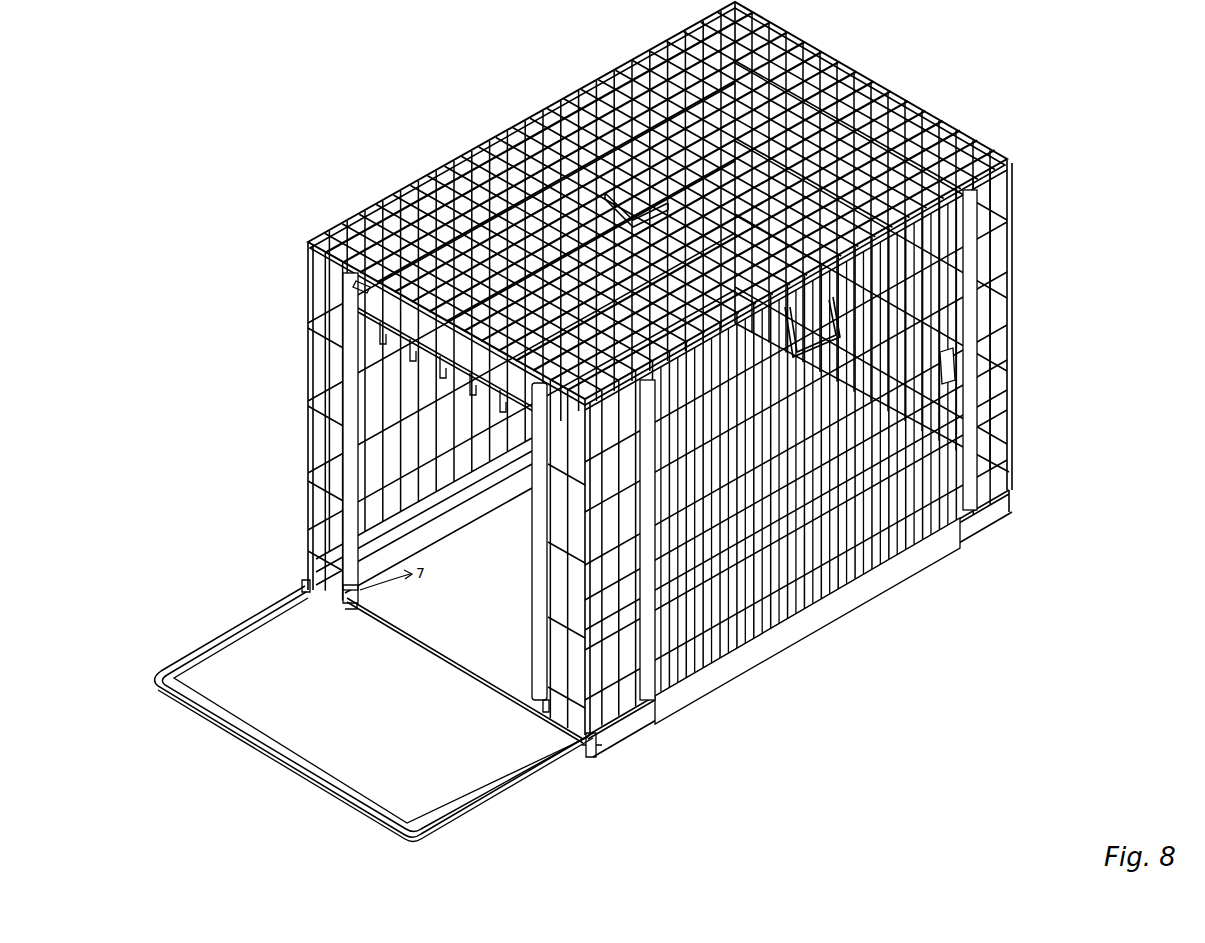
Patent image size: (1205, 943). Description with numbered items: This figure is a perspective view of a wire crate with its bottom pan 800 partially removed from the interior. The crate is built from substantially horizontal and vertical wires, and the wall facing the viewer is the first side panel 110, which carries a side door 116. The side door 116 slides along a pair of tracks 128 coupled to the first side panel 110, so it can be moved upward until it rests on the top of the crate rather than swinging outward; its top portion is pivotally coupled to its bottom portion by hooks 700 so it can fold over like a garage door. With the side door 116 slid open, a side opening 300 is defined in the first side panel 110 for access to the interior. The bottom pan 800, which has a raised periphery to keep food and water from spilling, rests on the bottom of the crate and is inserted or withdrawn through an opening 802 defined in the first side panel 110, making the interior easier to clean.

The first side panel 110 is at (330, 412).
The side door 116 is at (468, 156).
The tracks 128 is at (353, 472).
The side opening 300 is at (305, 595).
The hooks 700 is at (366, 287).
The bottom pan 800 is at (385, 726).
The opening 802 is at (595, 754).